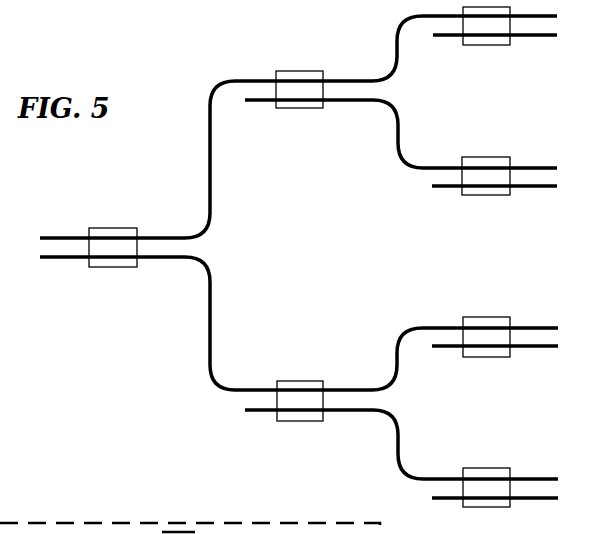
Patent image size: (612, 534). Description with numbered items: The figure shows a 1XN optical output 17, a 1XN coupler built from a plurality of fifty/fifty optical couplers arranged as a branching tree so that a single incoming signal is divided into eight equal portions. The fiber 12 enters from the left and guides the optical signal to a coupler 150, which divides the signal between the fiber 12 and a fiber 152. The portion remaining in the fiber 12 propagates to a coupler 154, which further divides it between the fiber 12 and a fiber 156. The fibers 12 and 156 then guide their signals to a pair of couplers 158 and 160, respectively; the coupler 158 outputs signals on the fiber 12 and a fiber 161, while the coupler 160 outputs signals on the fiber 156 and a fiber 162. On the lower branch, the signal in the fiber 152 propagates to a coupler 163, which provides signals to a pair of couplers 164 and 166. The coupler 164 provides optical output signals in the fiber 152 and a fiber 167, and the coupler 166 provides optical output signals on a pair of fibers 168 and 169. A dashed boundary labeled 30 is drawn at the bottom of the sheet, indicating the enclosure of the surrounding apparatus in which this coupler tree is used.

The fiber 12 is at (210, 137).
The 1XN optical output 17 is at (78, 383).
The enclosure 30 is at (60, 520).
The coupler 150 is at (127, 228).
The fiber 152 is at (208, 302).
The coupler 154 is at (304, 108).
The fiber 156 is at (413, 160).
The coupler 158 is at (501, 47).
The coupler 160 is at (490, 196).
The fiber 161 is at (528, 38).
The fiber 162 is at (527, 188).
The coupler 163 is at (313, 381).
The coupler 164 is at (490, 316).
The coupler 166 is at (500, 468).
The fiber 167 is at (546, 348).
The fiber 168 is at (527, 325).
The fiber 169 is at (527, 500).